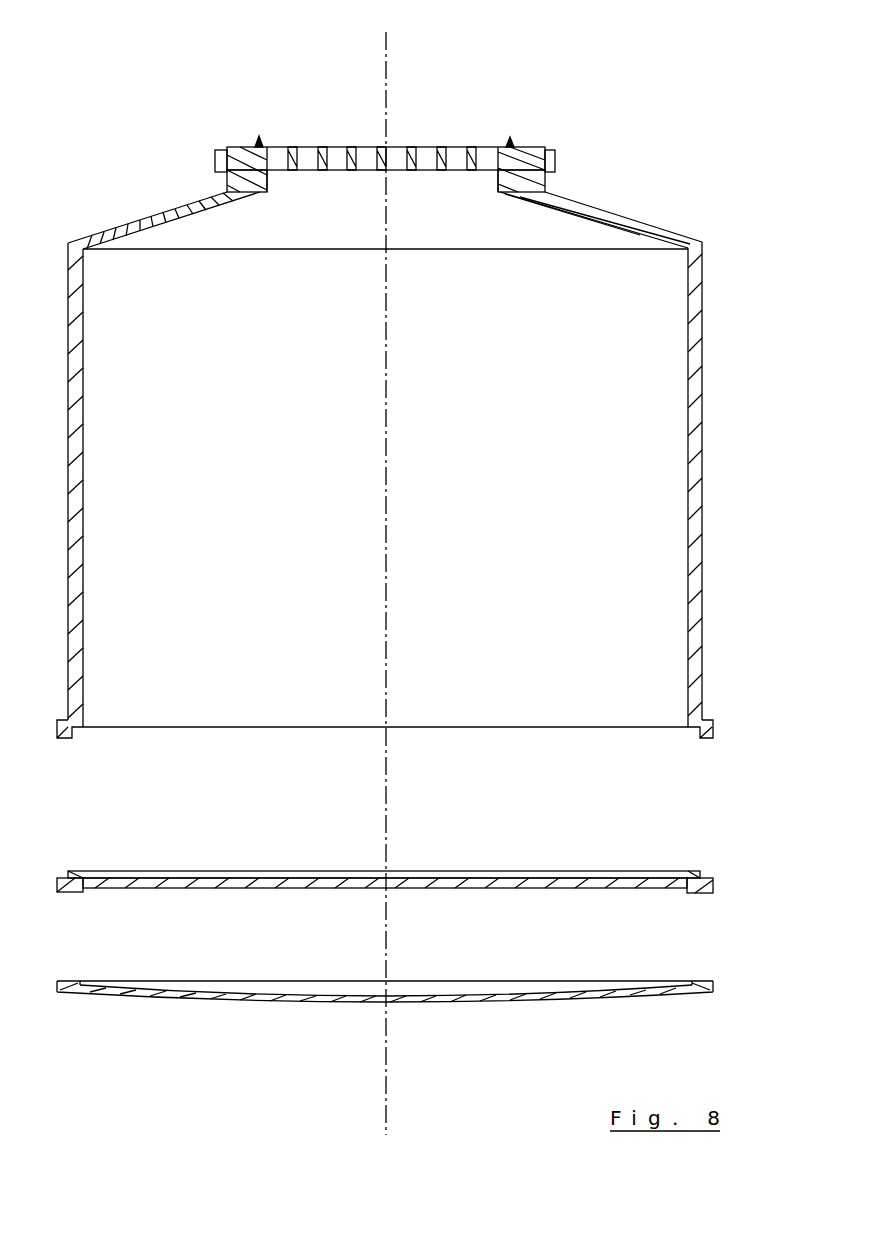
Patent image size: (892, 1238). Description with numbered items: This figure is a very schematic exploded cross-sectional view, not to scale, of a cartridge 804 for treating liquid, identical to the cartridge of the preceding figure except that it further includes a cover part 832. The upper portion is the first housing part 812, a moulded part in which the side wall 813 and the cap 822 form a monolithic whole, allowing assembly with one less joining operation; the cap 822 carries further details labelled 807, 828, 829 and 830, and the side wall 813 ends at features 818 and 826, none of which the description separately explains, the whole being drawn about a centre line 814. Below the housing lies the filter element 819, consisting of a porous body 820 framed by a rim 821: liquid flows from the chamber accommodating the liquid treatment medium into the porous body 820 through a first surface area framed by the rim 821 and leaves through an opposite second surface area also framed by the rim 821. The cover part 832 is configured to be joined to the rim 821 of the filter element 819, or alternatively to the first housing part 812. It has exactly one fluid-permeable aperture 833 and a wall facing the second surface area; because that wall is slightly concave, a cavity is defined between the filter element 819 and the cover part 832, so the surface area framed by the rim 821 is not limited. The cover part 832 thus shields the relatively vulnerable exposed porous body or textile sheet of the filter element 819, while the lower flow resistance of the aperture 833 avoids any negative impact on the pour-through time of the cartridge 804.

The cartridge 804 is at (449, 102).
The cap body 807 is at (440, 147).
The first housing part 812 is at (425, 426).
The side wall 813 is at (702, 480).
The central axis 814 is at (391, 49).
The bottom opening 818 is at (442, 718).
The filter element 819 is at (426, 835).
The porous body 820 is at (300, 871).
The rim 821 is at (695, 870).
The shoulder wall 822 is at (613, 213).
The bottom flange 826 is at (704, 705).
The cap tab 828 is at (551, 152).
The cap tab 829 is at (259, 140).
The top seal strip 830 is at (412, 147).
The cover part 832 is at (385, 962).
The fluid-permeable aperture 833 is at (405, 994).